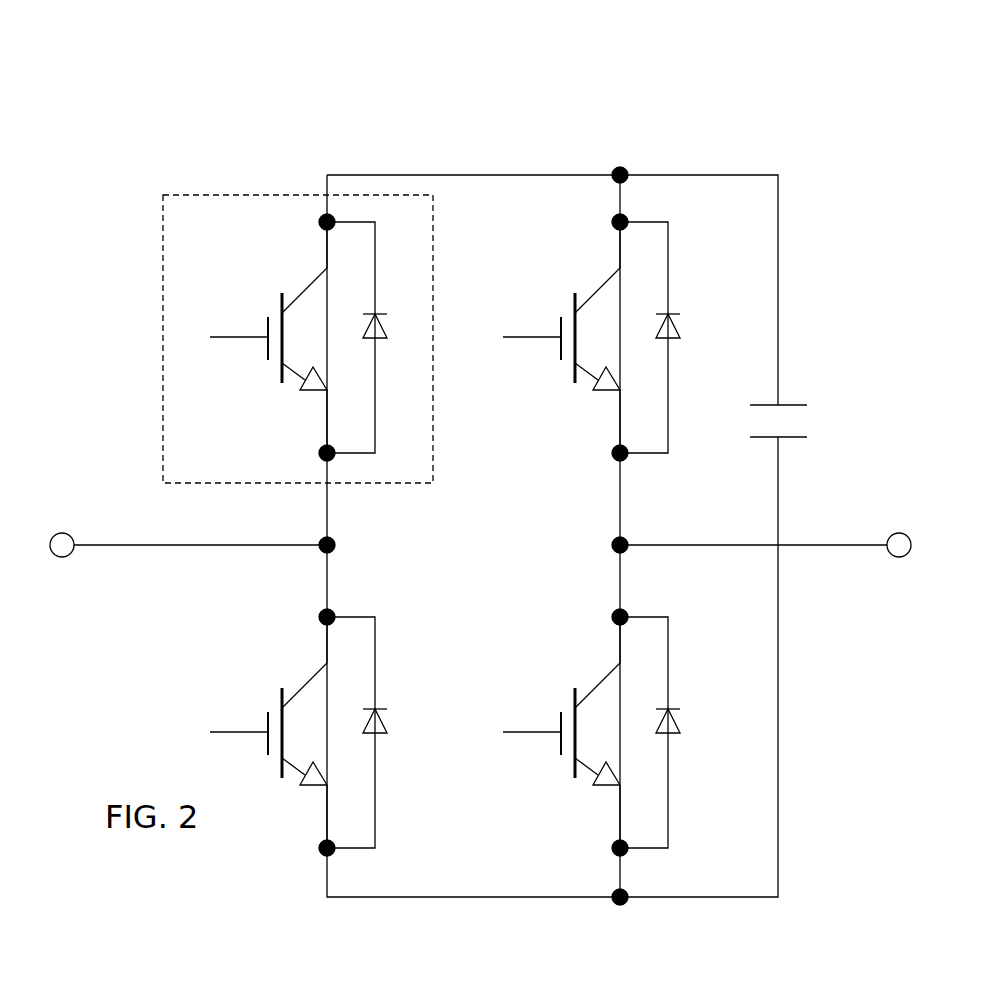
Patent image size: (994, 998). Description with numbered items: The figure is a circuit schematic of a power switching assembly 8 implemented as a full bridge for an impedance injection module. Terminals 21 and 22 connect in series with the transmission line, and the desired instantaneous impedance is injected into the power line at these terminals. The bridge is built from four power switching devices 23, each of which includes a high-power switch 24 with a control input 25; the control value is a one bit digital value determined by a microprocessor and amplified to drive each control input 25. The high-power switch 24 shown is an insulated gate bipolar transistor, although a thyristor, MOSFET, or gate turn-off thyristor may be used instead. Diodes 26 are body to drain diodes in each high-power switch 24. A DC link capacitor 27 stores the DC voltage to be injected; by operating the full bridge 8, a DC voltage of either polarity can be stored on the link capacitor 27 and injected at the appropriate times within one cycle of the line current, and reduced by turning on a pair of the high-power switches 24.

The power switching assembly 8 is at (305, 98).
The terminal 21 is at (49, 539).
The terminal 22 is at (905, 558).
The power switching device 23 is at (163, 283).
The high-power switch 24 is at (271, 265).
The control input 25 is at (235, 340).
The diode 26 is at (381, 327).
The DC link capacitor 27 is at (795, 402).